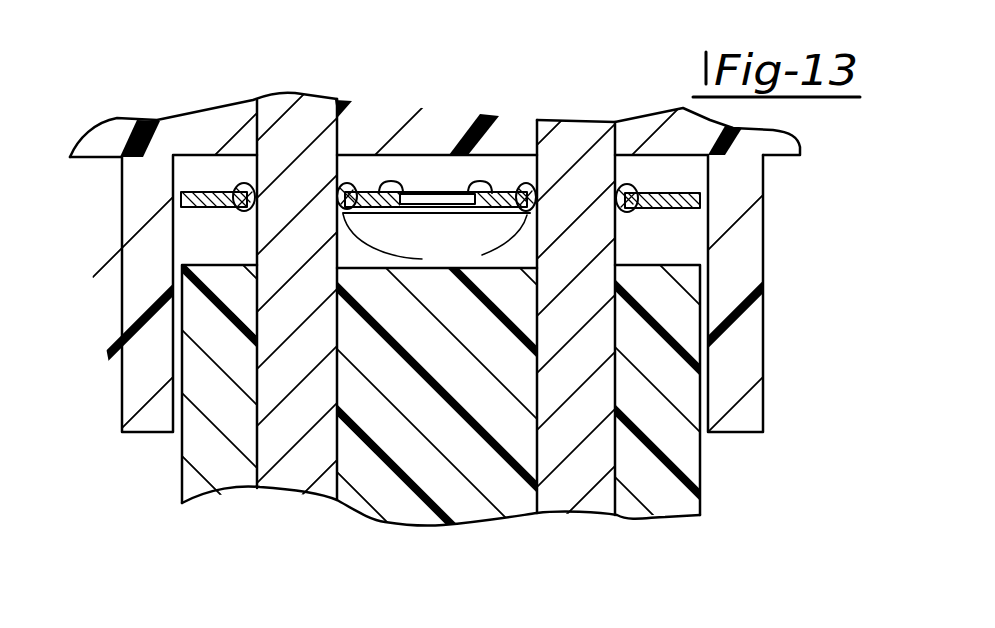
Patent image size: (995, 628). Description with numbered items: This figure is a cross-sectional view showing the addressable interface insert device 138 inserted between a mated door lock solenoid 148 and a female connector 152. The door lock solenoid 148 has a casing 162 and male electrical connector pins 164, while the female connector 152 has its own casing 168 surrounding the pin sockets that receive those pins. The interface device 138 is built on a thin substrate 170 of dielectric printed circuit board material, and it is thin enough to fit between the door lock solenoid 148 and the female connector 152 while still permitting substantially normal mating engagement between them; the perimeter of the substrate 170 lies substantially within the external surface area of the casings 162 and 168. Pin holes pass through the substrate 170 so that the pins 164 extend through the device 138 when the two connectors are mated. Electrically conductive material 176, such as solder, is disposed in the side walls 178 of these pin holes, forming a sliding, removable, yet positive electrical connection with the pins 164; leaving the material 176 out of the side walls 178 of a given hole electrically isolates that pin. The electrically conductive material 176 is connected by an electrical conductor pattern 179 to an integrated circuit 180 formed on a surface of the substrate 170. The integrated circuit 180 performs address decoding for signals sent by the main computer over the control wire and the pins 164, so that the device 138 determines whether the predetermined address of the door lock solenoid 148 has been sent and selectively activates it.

The addressable interface insert device 138 is at (405, 170).
The door lock solenoid 148 is at (102, 114).
The female connector 152 is at (708, 543).
The casing 162 is at (764, 272).
The male electrical connector pins 164 is at (296, 105).
The casing 168 is at (692, 461).
The substrate 170 is at (184, 209).
The electrically conductive material 176 is at (248, 212).
The side walls 178 is at (233, 184).
The electrical conductor pattern 179 is at (376, 186).
The integrated circuit 180 is at (443, 187).